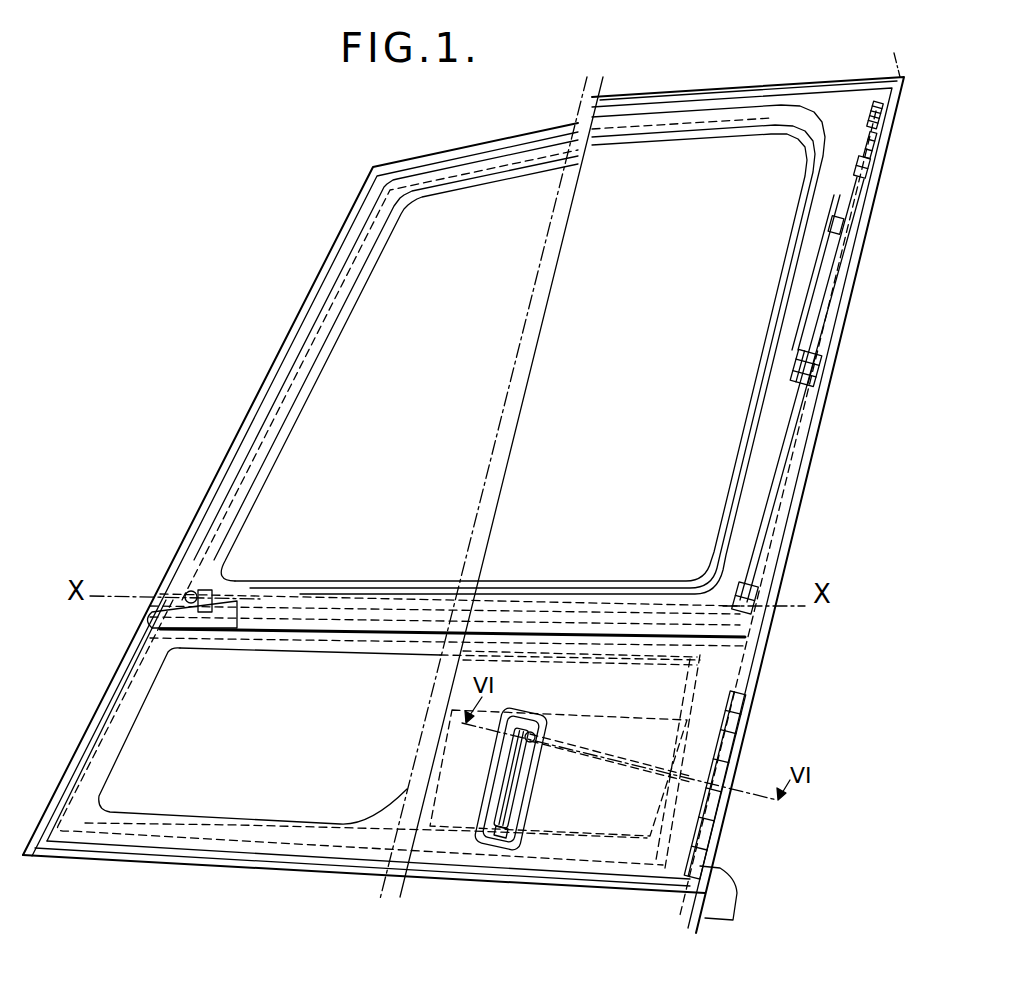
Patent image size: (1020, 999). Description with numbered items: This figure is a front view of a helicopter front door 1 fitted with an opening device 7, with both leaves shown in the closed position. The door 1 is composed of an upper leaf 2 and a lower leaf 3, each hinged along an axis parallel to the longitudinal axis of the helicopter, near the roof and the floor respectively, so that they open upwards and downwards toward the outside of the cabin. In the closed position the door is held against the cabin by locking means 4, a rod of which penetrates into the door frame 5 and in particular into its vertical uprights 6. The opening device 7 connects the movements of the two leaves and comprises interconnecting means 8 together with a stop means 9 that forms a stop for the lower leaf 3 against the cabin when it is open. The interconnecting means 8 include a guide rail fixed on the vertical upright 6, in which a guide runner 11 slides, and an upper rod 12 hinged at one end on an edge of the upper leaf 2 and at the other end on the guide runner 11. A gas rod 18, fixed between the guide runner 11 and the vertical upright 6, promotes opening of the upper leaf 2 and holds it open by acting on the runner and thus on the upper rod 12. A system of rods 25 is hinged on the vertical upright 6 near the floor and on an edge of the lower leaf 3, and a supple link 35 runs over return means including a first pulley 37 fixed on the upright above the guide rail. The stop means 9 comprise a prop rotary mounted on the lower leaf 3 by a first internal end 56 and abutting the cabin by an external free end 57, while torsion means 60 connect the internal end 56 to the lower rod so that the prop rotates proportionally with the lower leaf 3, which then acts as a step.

The front door 1 is at (252, 308).
The upper leaf 2 is at (509, 349).
The lower leaf 3 is at (379, 734).
The locking means 4 is at (203, 630).
The door frame 5 is at (267, 381).
The vertical uprights 6 is at (893, 100).
The opening device 7 is at (827, 403).
The interconnecting means 8 is at (780, 523).
The stop means 9 is at (505, 784).
The guide runner 11 is at (813, 373).
The upper rod 12 is at (823, 282).
The gas rod 18 is at (777, 468).
The system of rods 25 is at (750, 731).
The supple link 35 is at (848, 250).
The first pulley 37 is at (857, 183).
The first internal end 56 is at (534, 737).
The external free end 57 is at (503, 833).
The torsion means 60 is at (617, 771).